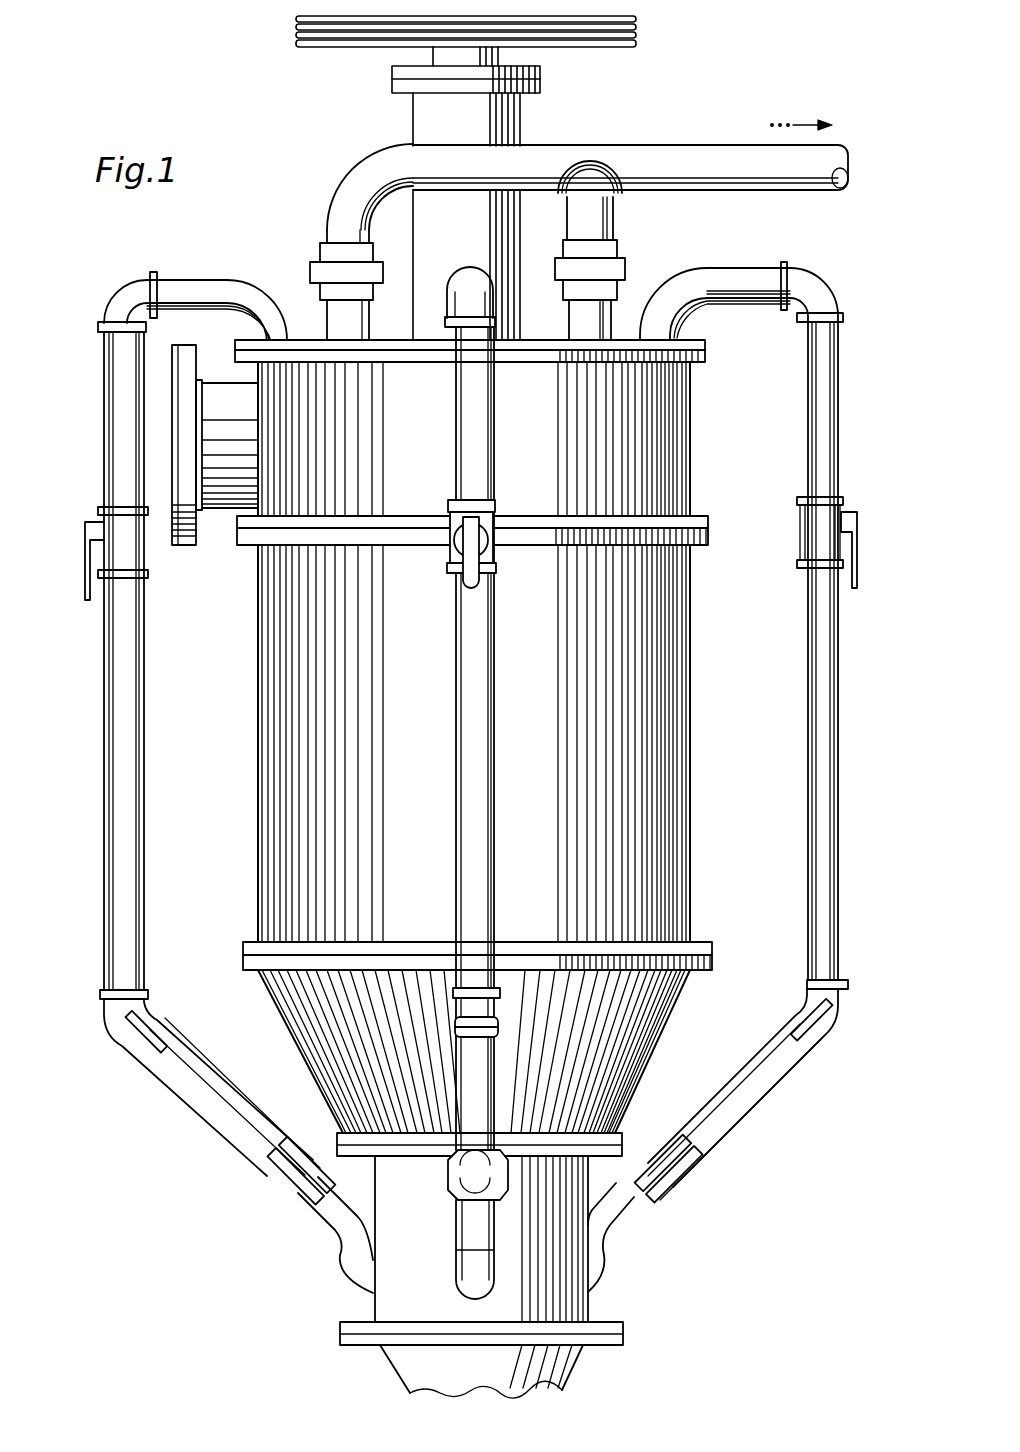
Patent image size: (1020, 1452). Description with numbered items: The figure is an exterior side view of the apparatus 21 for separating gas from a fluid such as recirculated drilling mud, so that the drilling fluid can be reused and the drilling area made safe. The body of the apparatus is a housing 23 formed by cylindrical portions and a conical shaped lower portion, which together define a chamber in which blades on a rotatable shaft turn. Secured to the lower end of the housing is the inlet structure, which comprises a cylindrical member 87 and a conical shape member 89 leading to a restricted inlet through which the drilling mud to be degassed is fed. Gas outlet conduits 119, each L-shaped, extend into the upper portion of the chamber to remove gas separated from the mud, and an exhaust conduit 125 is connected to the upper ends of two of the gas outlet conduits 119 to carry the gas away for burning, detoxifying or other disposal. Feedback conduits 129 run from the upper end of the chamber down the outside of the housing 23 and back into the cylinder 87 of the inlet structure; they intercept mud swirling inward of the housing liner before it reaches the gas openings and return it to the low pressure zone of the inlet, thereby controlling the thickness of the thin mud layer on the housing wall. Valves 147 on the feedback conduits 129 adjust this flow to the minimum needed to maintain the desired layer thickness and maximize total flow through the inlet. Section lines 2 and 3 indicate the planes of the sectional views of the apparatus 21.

The section line 2- 2 is at (467, 0).
The section line 3- 3 is at (733, 554).
The apparatus 21 is at (168, 1142).
The housing 23 is at (258, 748).
The cylindrical member 87 is at (374, 1311).
The conical shape member 89 is at (575, 1362).
The gas outlet conduits 119 is at (322, 320).
The exhaust conduit 125 is at (777, 193).
The feedback conduits 129 is at (846, 748).
The valves 147 is at (860, 527).